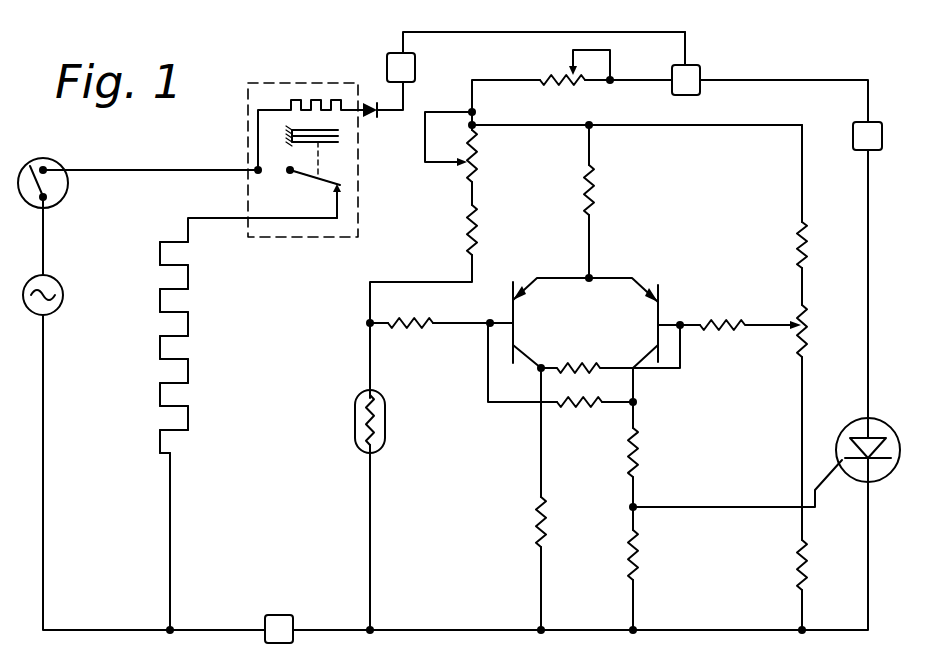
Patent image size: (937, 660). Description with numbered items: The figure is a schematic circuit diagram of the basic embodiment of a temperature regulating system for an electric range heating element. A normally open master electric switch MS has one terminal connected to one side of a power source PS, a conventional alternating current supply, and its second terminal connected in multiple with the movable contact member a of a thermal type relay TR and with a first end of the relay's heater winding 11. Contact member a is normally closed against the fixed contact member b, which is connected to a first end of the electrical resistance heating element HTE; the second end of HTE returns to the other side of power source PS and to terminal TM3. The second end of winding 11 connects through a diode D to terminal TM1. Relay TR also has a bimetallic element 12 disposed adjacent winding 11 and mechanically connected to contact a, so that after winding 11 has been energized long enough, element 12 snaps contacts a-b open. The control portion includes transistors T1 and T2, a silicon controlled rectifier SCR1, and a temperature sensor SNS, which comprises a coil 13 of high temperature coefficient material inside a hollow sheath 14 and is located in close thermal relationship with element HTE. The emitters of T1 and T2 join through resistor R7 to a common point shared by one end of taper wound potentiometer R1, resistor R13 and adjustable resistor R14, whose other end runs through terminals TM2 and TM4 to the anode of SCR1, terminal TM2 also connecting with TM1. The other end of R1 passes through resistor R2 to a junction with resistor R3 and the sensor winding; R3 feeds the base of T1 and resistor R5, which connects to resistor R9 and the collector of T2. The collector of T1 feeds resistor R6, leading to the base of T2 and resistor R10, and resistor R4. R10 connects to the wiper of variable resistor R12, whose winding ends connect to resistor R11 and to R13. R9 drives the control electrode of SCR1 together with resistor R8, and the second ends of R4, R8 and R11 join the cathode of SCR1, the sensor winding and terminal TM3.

The heater winding 11 is at (297, 100).
The thermal type relay TR is at (311, 80).
The bimetallic element 12 is at (332, 145).
The movable contact member a is at (330, 178).
The fixed contact member b is at (335, 203).
The diode D is at (368, 113).
The terminal TM1 is at (397, 53).
The terminal TM2 is at (690, 65).
The terminal TM3 is at (277, 615).
The terminal TM4 is at (863, 122).
The taper wound potentiometer R1 is at (480, 153).
The resistor R2 is at (467, 232).
The resistor R3 is at (405, 330).
The resistor R4 is at (533, 523).
The resistor R5 is at (585, 412).
The resistor R6 is at (580, 362).
The resistor R7 is at (598, 186).
The resistor R8 is at (639, 548).
The resistor R9 is at (639, 450).
The resistor R10 is at (715, 333).
The resistor R11 is at (792, 568).
The variable resistor R12 is at (797, 308).
The resistor R13 is at (795, 237).
The adjustable resistor R14 is at (548, 67).
The transistor T1 is at (522, 274).
The transistor T2 is at (648, 276).
The silicon controlled rectifier SCR1 is at (852, 417).
The temperature sensor SNS is at (385, 423).
The coil 13 is at (375, 405).
The hollow sheath 14 is at (382, 447).
The electrical resistance heating element HTE is at (188, 280).
The master electric switch MS is at (58, 202).
The power source PS is at (63, 295).